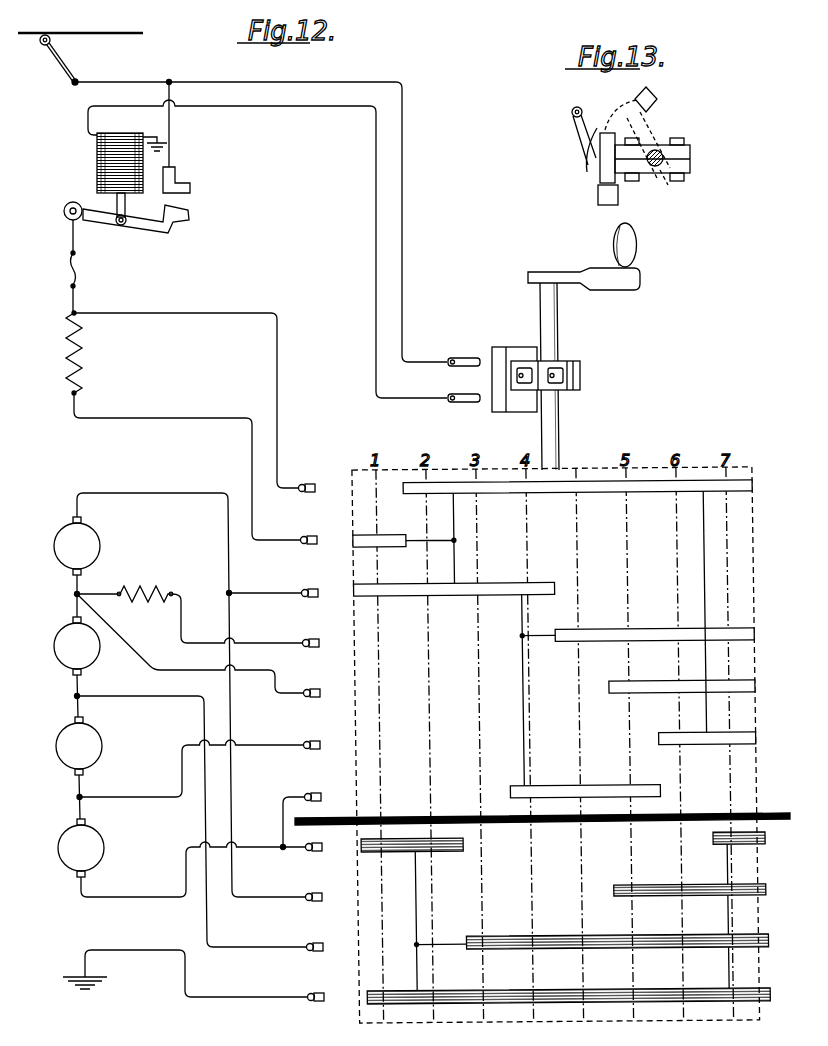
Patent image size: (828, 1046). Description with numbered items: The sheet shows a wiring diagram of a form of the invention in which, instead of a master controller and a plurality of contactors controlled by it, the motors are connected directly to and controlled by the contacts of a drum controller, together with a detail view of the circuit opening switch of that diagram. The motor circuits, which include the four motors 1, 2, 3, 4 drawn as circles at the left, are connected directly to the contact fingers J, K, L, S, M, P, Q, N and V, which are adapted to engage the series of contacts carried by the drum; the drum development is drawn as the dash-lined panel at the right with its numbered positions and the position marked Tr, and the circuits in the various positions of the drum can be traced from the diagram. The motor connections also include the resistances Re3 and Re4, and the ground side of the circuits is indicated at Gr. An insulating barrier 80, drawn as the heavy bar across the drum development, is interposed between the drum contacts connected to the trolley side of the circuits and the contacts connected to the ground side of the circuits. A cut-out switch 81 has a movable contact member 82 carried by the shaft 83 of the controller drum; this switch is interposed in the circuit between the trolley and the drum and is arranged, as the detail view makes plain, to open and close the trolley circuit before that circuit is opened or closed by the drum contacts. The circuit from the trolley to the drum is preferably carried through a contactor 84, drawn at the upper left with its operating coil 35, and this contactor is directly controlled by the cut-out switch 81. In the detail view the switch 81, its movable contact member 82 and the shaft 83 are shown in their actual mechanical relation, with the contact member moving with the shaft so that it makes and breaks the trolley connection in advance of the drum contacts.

In FIG. 12, the electromagnet coil 35 is at (105, 152).
In FIG. 12, the contactor 84 is at (151, 226).
In FIG. 12, the resistance Re3 is at (81, 358).
In FIG. 12, the resistance Re4 is at (125, 579).
In FIG. 12, the insulating barrier 80 is at (450, 817).
In FIG. 12, the cut-out switch 81 is at (513, 352).
In FIG. 13, the cut-out switch 81 is at (600, 177).
In FIG. 12, the movable contact member 82 is at (552, 368).
In FIG. 13, the movable contact member 82 is at (647, 177).
In FIG. 12, the shaft 83 is at (553, 420).
In FIG. 13, the shaft 83 is at (657, 149).
In FIG. 12, the controller handle Tr is at (584, 346).
In FIG. 12, the ground Gr is at (78, 1000).
In FIG. 12, the motor 1 is at (77, 546).
In FIG. 12, the motor 2 is at (77, 646).
In FIG. 12, the motor 3 is at (79, 746).
In FIG. 12, the motor 4 is at (81, 848).
In FIG. 12, the contact finger J is at (312, 487).
In FIG. 12, the contact finger K is at (319, 539).
In FIG. 12, the contact finger L is at (320, 744).
In FIG. 12, the contact finger S is at (320, 642).
In FIG. 12, the contact finger M is at (324, 692).
In FIG. 12, the contact finger P is at (321, 744).
In FIG. 12, the contact finger Q is at (324, 821).
In FIG. 12, the contact finger N is at (325, 946).
In FIG. 12, the contact finger V is at (327, 996).